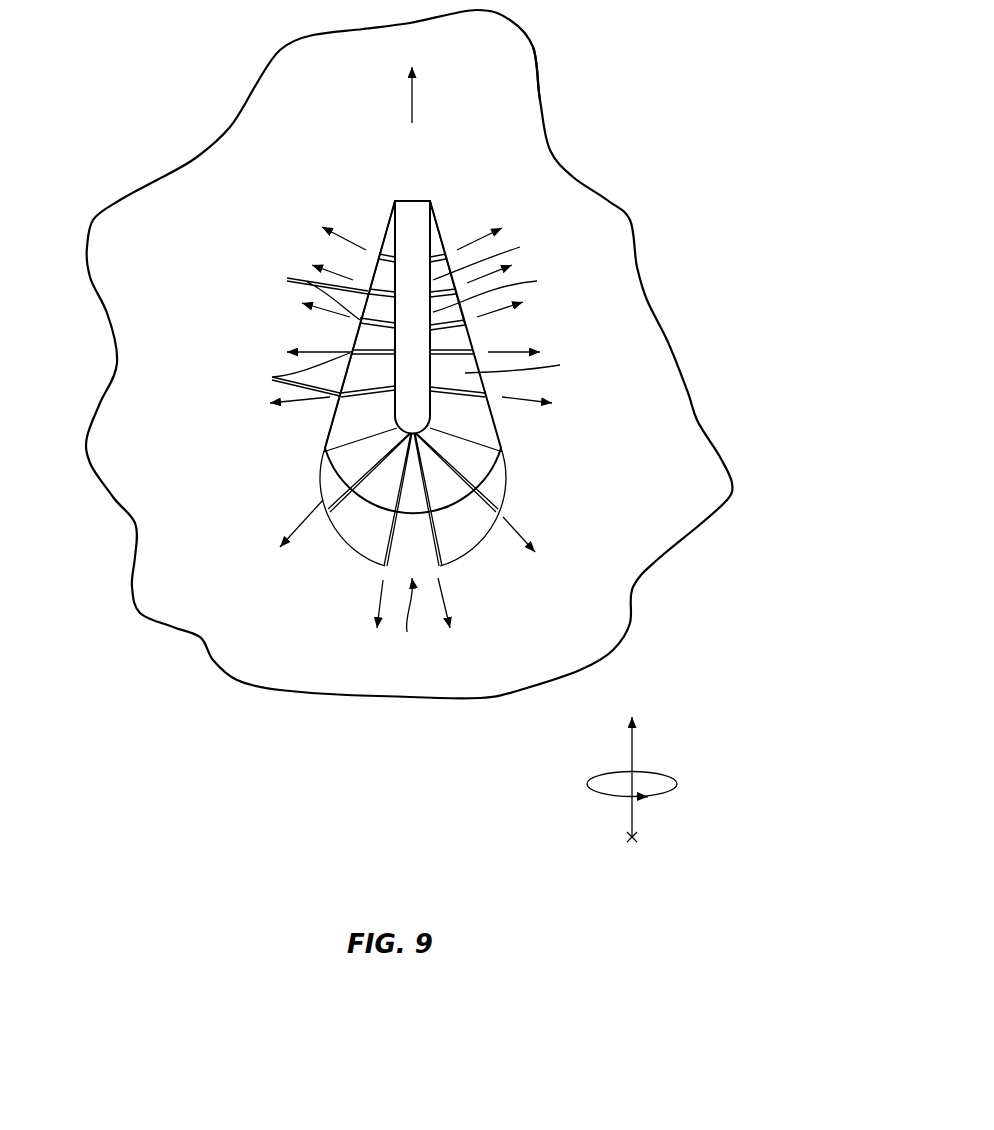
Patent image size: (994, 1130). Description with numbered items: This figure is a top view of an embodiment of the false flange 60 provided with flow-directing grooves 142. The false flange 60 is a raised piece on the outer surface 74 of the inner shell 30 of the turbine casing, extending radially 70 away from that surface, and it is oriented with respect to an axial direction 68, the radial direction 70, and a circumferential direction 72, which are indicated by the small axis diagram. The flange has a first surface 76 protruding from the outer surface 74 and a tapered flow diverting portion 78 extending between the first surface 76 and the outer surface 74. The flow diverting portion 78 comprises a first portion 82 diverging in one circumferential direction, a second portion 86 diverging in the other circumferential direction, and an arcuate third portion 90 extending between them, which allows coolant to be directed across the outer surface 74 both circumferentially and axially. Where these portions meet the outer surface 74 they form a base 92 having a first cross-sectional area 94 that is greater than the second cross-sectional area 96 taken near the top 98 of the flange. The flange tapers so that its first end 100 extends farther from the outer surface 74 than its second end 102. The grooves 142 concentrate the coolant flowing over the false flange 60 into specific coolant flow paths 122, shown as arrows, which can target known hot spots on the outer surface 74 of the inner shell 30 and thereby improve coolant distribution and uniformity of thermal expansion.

The inner shell 30 is at (540, 97).
The outer surface 74 is at (513, 62).
The false flange 60 is at (333, 427).
The first surface 76 is at (417, 217).
The radial direction 70 is at (405, 250).
The flow diverting portion 78 is at (327, 457).
The first portion 82 is at (333, 410).
The second portion 86 is at (482, 430).
The third portion 90 is at (328, 477).
The first cross-sectional area 94 is at (492, 467).
The base 92 is at (526, 363).
The second cross-sectional area 96 is at (489, 256).
The top 98 is at (499, 290).
The first end 100 is at (413, 620).
The second end 102 is at (405, 192).
The coolant flow paths 122 is at (340, 273).
The grooves 142 is at (473, 578).
The axial direction 68 is at (632, 753).
The circumferential direction 72 is at (663, 775).